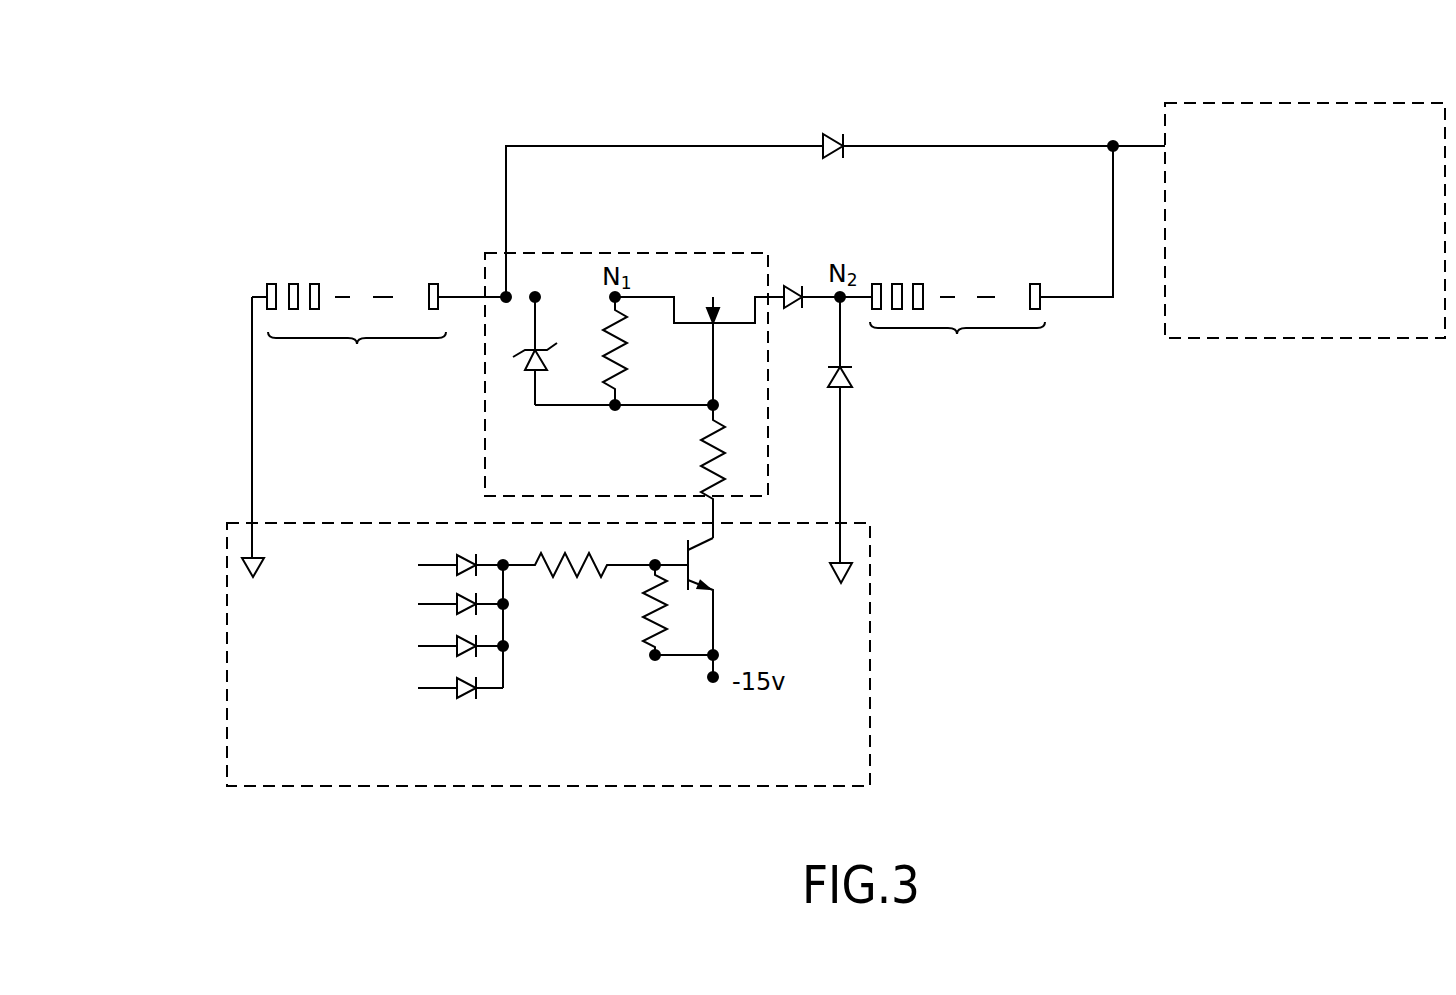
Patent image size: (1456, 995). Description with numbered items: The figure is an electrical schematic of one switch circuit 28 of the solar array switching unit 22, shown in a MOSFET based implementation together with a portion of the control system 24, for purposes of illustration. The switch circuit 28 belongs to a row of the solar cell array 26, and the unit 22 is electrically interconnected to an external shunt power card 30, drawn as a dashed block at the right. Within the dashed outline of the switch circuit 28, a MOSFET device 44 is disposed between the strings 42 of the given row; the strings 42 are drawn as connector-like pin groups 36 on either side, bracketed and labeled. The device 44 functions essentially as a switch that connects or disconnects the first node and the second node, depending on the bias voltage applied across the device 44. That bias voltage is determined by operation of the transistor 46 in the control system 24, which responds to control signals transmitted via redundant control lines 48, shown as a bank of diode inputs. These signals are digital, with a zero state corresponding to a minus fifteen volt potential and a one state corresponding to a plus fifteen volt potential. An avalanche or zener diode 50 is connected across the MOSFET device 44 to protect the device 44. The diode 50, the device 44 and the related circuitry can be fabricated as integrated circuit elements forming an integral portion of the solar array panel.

The solar array switching unit 22 is at (966, 100).
The control system 24 is at (870, 648).
The solar cell array 26 is at (1043, 484).
The switch circuit 28 is at (226, 324).
The external shunt power card 30 is at (1308, 338).
The connector pins 36 is at (296, 285).
The strings 42 is at (682, 293).
The MOSFET device 44 is at (702, 281).
The transistor 46 is at (730, 566).
The redundant control lines 48 is at (434, 551).
The zener diode 50 is at (558, 386).